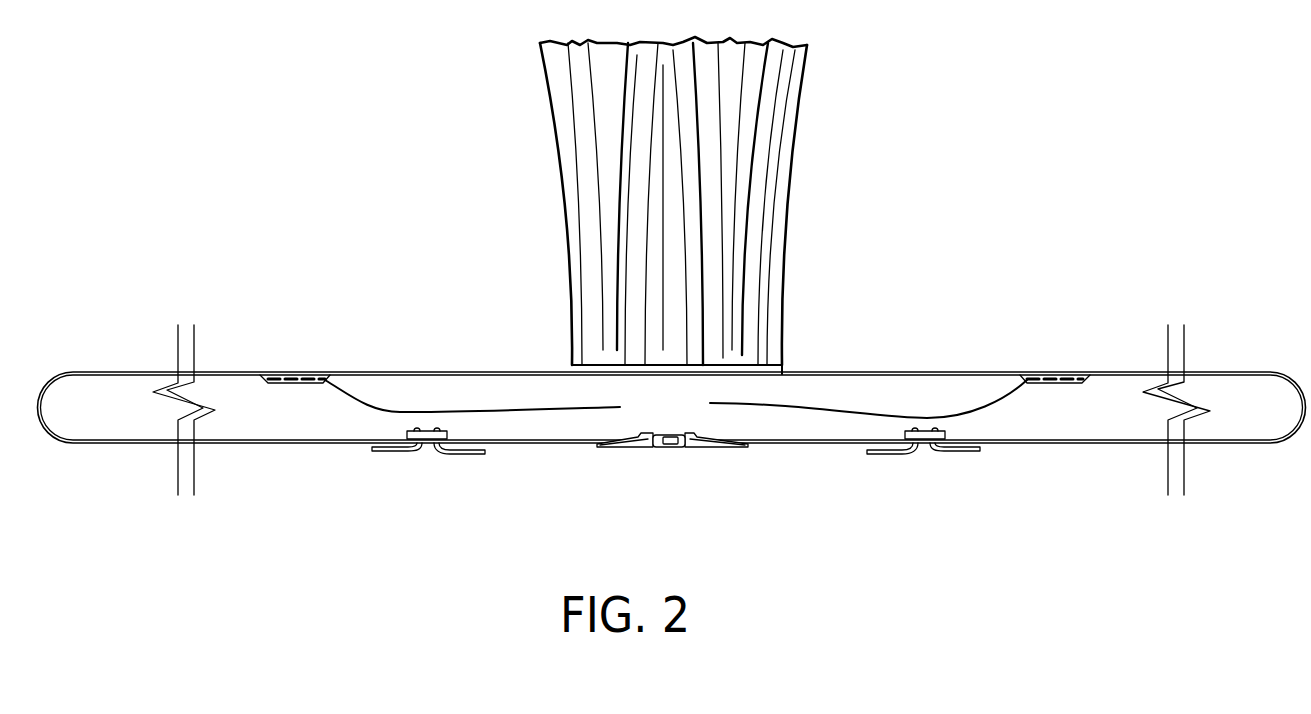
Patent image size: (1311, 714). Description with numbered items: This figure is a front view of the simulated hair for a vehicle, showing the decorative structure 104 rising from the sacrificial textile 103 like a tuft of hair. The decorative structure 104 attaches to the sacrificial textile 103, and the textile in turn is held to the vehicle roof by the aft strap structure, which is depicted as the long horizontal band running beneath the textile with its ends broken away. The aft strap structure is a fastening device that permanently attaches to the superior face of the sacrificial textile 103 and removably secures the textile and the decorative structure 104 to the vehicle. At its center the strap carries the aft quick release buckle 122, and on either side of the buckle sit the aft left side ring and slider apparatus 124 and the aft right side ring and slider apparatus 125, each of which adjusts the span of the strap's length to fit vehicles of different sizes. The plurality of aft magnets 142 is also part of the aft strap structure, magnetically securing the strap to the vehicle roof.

The sacrificial textile 103 is at (782, 373).
The decorative structure 104 is at (785, 128).
The plurality of aft magnets 142 is at (672, 407).
The aft quick release buckle 122 is at (663, 447).
The aft left side ring and slider apparatus 124 is at (417, 445).
The aft right side ring and slider apparatus 125 is at (923, 445).